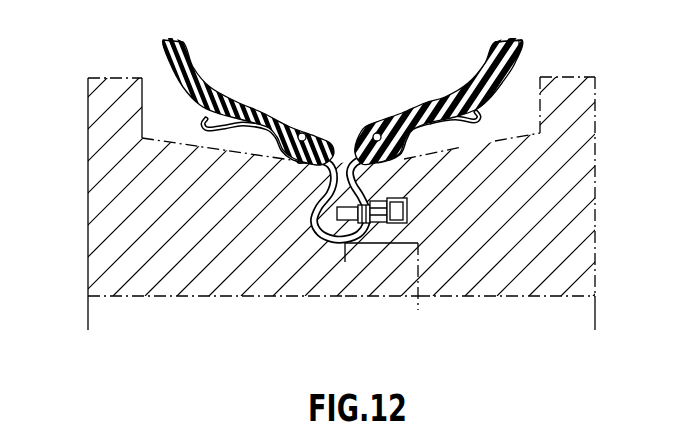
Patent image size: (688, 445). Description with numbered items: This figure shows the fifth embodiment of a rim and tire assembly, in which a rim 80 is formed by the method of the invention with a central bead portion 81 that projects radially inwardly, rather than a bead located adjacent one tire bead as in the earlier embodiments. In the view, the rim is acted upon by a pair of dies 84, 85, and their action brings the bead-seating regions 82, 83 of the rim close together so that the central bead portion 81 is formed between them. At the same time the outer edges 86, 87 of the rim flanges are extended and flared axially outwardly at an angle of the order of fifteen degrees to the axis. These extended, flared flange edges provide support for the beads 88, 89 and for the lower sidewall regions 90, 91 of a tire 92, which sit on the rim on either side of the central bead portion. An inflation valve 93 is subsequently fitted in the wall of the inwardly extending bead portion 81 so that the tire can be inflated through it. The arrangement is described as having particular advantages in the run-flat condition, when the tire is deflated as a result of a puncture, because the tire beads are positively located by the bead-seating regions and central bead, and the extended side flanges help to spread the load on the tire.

The rim 80 is at (359, 135).
The central bead portion 81 is at (344, 245).
The bead-seating region 82 is at (303, 154).
The bead-seating region 83 is at (388, 159).
The die 84 is at (275, 292).
The die 85 is at (500, 294).
The outer edge of rim flange 86 is at (247, 123).
The outer edge of rim flange 87 is at (453, 119).
The bead 88 is at (302, 133).
The bead 89 is at (378, 133).
The lower sidewall region 90 is at (237, 103).
The lower sidewall region 91 is at (445, 93).
The tire 92 is at (518, 60).
The inflation valve 93 is at (397, 224).